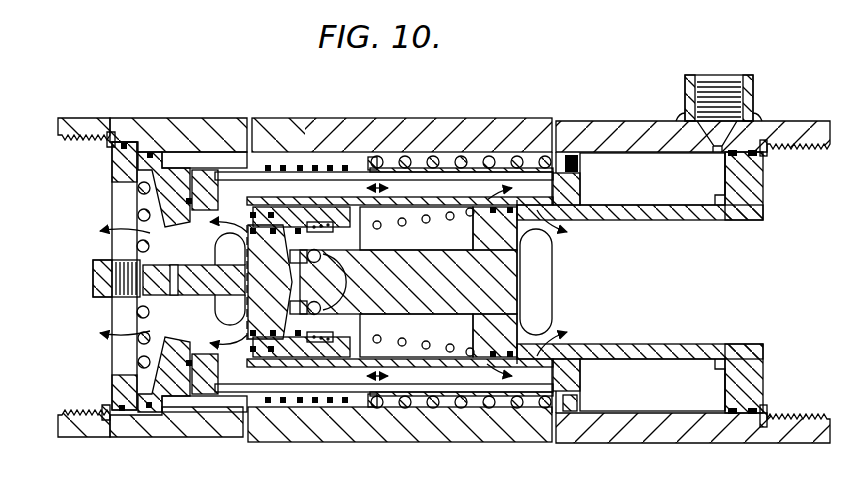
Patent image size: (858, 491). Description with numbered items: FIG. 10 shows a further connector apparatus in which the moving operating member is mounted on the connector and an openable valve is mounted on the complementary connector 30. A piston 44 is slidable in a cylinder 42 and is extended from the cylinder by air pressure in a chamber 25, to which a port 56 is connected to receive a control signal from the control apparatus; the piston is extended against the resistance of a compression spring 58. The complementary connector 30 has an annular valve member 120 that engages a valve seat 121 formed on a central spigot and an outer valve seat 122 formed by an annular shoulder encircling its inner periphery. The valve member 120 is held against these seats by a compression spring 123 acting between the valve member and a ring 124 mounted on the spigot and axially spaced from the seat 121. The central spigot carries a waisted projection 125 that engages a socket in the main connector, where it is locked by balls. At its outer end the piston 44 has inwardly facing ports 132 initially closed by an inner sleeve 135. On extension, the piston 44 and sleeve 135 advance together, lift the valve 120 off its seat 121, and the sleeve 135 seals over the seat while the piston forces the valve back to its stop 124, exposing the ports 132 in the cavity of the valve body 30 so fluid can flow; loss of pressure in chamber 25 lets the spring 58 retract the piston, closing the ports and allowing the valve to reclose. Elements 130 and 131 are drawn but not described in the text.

The complementary connector 30 is at (84, 104).
The outer valve seat 122 is at (205, 118).
The inner sleeve 135 is at (297, 203).
The piston 44 is at (350, 170).
The compression spring 58 is at (423, 160).
The cylinder 42 is at (490, 120).
The chamber 25 is at (598, 163).
The port 56 is at (730, 78).
The annular valve member 120 is at (152, 193).
The compression spring 123 is at (137, 209).
The ring 124 is at (112, 250).
The valve seat 121 is at (245, 230).
The waisted projection 125 is at (345, 276).
The ports 132 is at (224, 313).
The slot 130 is at (545, 320).
The lower housing 131 is at (413, 378).